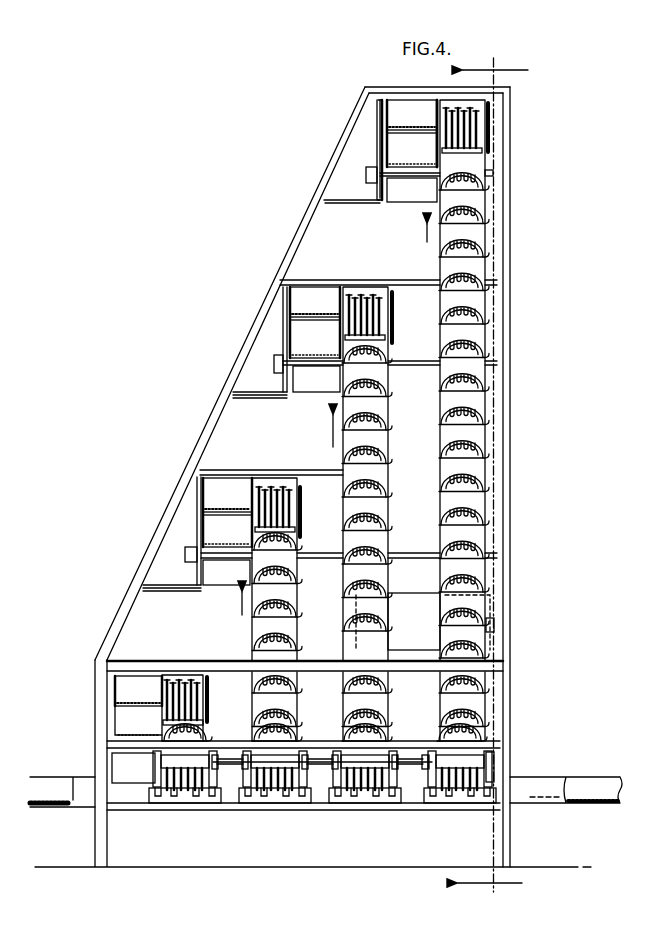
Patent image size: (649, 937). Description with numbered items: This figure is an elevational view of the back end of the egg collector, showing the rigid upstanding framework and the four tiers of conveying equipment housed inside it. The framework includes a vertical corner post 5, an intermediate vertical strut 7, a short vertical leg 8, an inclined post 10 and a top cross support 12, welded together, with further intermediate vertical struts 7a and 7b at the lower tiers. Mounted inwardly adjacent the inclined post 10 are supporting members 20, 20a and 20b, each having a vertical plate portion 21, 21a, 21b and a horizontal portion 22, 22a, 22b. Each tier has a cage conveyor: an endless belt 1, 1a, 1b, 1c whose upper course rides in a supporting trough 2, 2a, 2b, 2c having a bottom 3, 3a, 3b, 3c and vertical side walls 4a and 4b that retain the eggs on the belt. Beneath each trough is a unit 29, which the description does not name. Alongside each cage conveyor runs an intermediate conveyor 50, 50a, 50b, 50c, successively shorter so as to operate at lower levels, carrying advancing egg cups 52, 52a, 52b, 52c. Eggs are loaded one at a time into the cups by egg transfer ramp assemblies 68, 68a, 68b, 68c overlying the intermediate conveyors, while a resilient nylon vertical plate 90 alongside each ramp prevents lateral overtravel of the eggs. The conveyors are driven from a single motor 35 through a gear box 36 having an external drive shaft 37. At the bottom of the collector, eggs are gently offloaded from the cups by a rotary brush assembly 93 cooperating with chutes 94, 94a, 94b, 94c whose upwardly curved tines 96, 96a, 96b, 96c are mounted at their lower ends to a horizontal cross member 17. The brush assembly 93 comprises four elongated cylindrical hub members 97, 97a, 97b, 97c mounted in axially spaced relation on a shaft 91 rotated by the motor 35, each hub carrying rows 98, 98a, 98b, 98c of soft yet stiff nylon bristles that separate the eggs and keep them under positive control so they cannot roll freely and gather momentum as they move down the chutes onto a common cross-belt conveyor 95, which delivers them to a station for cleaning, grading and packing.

The cage conveyor belt 1 is at (405, 122).
The cage conveyor belt 1a is at (312, 318).
The cage conveyor belt 1b is at (222, 507).
The cage conveyor belt 1c is at (133, 703).
The supporting trough 2 is at (373, 100).
The supporting trough 2a is at (290, 298).
The supporting trough 2b is at (202, 487).
The supporting trough 2c is at (115, 682).
The trough bottom 3 is at (410, 154).
The trough bottom 3a is at (313, 342).
The trough bottom 3b is at (226, 536).
The trough bottom 3c is at (137, 710).
The side wall 4a is at (377, 108).
The side wall 4b is at (432, 108).
The vertical corner post 5 is at (508, 340).
The intermediate vertical strut 7 is at (364, 175).
The intermediate vertical strut 7a is at (275, 374).
The intermediate vertical strut 7b is at (191, 565).
The short vertical leg 8 is at (100, 838).
The inclined post 10 is at (308, 207).
The top cross support 12 is at (448, 93).
The cross member 17 is at (118, 808).
The supporting member 20 is at (377, 138).
The supporting member 20a is at (243, 397).
The supporting member 20b is at (160, 588).
The vertical plate portion 21 is at (377, 158).
The vertical plate portion 21a is at (283, 335).
The vertical plate portion 21b is at (197, 527).
The horizontal portion 22 is at (336, 198).
The horizontal portion 22a is at (243, 390).
The horizontal portion 22b is at (165, 583).
The drive unit 29 is at (274, 480).
The motor 35 is at (414, 621).
The gear box 36 is at (490, 603).
The external drive shaft 37 is at (495, 627).
The intermediate conveyor 50 is at (480, 232).
The intermediate conveyor 50a is at (388, 437).
The intermediate conveyor 50b is at (258, 632).
The intermediate conveyor 50c is at (170, 735).
The egg cup 52 is at (467, 183).
The egg cup 52a is at (365, 393).
The egg cup 52b is at (278, 553).
The egg cup 52c is at (198, 725).
The egg transfer ramp assembly 68 is at (490, 112).
The egg transfer ramp assembly 68a is at (368, 300).
The egg transfer ramp assembly 68b is at (277, 490).
The egg transfer ramp assembly 68c is at (183, 683).
The vertical plate 90 is at (492, 133).
The shaft 91 is at (415, 763).
The rotary brush assembly 93 is at (495, 763).
The chute 94 is at (422, 800).
The chute 94a is at (327, 797).
The chute 94b is at (237, 797).
The chute 94c is at (152, 805).
The cross-belt conveyor 95 is at (593, 797).
The chute tines 96 is at (473, 798).
The chute tines 96a is at (372, 798).
The chute tines 96b is at (278, 798).
The chute tines 96c is at (197, 798).
The hub member 97 is at (438, 745).
The hub member 97a is at (402, 773).
The hub member 97b is at (290, 770).
The hub member 97c is at (207, 775).
The bristle rows 98 is at (493, 737).
The bristle rows 98a is at (392, 737).
The bristle rows 98b is at (298, 732).
The bristle rows 98c is at (215, 798).